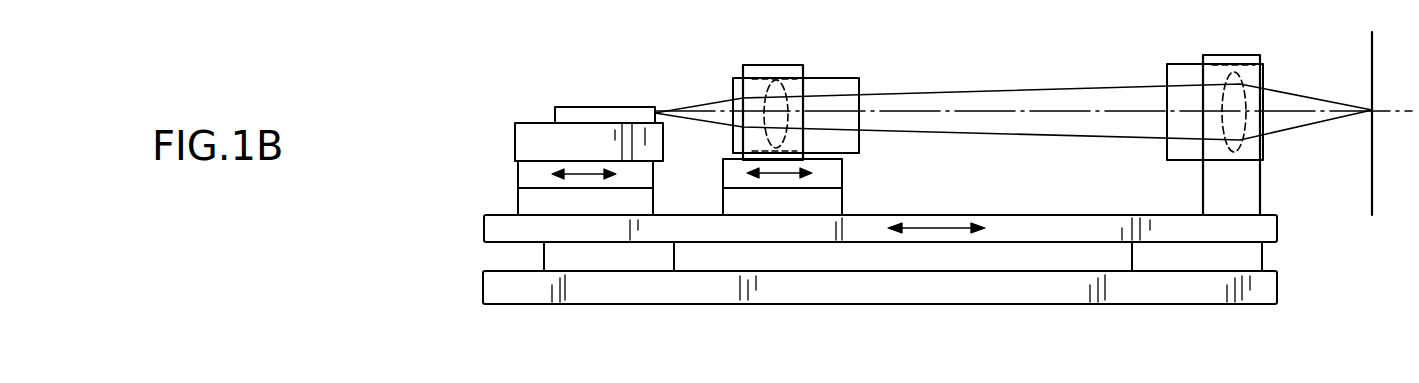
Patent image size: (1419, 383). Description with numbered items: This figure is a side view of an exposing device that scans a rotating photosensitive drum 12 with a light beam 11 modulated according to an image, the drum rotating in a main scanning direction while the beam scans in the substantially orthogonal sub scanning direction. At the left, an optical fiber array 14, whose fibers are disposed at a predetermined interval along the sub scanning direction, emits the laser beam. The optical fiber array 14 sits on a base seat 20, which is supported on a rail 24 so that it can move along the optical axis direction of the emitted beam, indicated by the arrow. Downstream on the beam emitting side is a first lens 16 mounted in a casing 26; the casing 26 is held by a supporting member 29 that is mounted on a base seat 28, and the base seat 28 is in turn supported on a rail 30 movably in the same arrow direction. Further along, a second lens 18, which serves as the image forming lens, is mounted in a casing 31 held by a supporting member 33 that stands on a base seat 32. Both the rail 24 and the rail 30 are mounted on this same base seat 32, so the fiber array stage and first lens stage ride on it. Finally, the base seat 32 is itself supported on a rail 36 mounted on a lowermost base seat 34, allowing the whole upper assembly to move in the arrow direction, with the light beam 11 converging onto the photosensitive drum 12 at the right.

The light beam 11 is at (930, 94).
The photosensitive drum 12 is at (1372, 78).
The optical fiber array 14 is at (603, 113).
The first lens 16 is at (766, 94).
The second lens 18 is at (1226, 80).
The base seat 20 is at (532, 138).
The rail 24 is at (533, 200).
The casing 26 is at (831, 88).
The base seat 28 is at (828, 177).
The supporting member 29 is at (790, 65).
The rail 30 is at (828, 210).
The casing 31 is at (1180, 73).
The base seat 32 is at (1063, 232).
The supporting member 33 is at (1240, 188).
The base seat 34 is at (952, 287).
The rail 36 is at (556, 258).